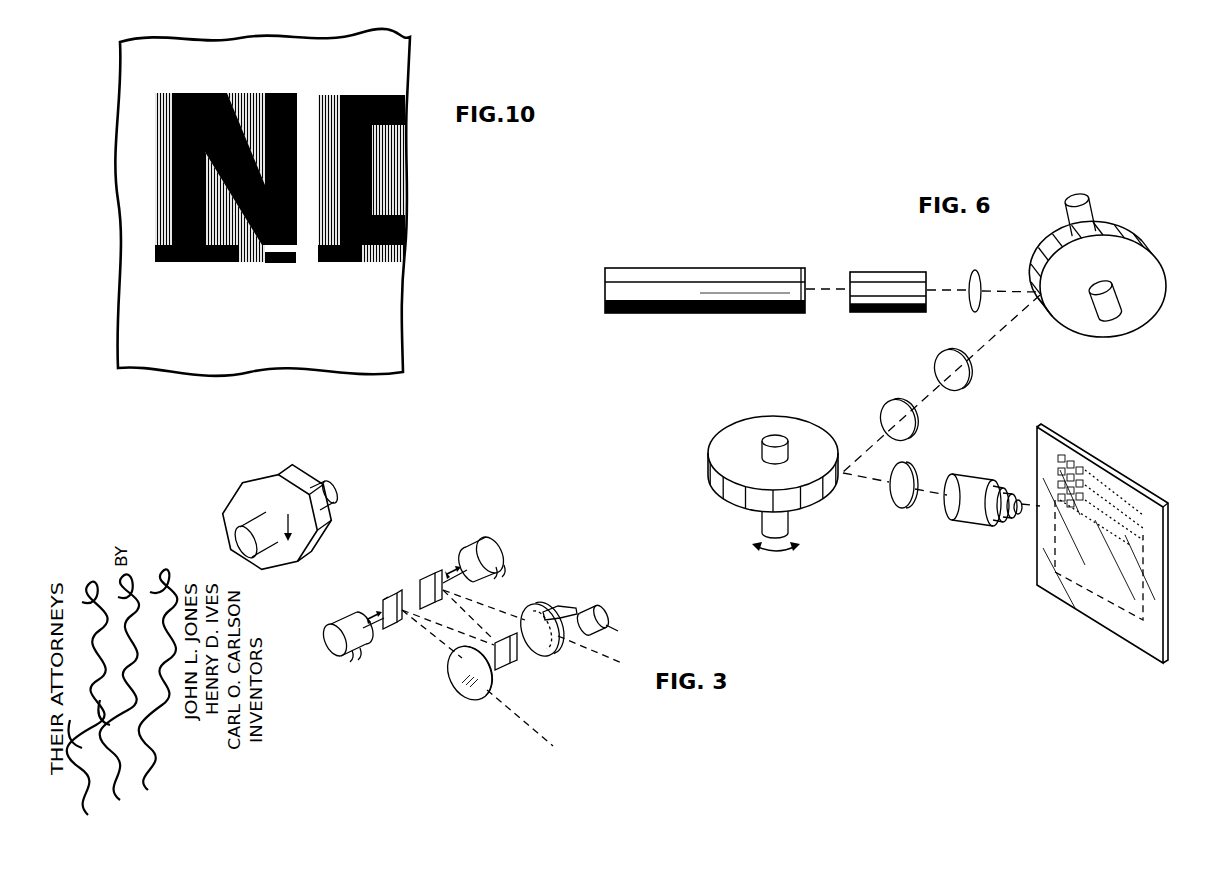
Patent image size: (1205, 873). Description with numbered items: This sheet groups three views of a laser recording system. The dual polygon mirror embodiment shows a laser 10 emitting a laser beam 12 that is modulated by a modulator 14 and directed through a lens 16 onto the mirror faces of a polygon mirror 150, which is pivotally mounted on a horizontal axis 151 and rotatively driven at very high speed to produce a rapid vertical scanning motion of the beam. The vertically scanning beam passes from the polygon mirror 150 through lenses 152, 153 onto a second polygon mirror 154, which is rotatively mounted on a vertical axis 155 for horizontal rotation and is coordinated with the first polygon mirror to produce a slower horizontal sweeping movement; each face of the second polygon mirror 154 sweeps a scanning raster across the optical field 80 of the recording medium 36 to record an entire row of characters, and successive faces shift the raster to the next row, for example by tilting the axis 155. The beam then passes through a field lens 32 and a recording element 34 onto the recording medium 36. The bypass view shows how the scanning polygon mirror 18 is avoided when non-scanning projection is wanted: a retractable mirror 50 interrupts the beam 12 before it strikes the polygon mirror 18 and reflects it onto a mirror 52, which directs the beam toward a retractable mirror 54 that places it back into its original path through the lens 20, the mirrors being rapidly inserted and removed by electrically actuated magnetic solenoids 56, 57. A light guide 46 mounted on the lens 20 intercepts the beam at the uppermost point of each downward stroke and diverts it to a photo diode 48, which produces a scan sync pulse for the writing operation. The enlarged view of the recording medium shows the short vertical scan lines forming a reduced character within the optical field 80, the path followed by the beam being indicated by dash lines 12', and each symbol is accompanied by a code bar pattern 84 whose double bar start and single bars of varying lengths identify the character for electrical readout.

In FIG. 6, the laser 10 is at (728, 275).
In FIG. 6, the laser beam 12 is at (827, 265).
In FIG. 10, the dash lines 12' is at (243, 172).
In FIG. 6, the modulator 14 is at (886, 276).
In FIG. 6, the lens 16 is at (980, 276).
In FIG. 3, the lens 16 is at (473, 691).
In FIG. 3, the polygon mirror 18 is at (306, 563).
In FIG. 3, the lens 20 is at (546, 650).
In FIG. 6, the field lens 32 is at (896, 504).
In FIG. 6, the recording element 34 is at (992, 512).
In FIG. 6, the recording medium 36 is at (1112, 490).
In FIG. 3, the light guide 46 is at (569, 608).
In FIG. 3, the photo diode 48 is at (600, 617).
In FIG. 3, the retractable mirror 50 is at (390, 592).
In FIG. 3, the mirror 52 is at (508, 667).
In FIG. 3, the retractable mirror 54 is at (432, 572).
In FIG. 3, the magnetic solenoid 56 is at (349, 622).
In FIG. 3, the magnetic solenoid 57 is at (500, 548).
In FIG. 10, the optical field 80 is at (398, 82).
In FIG. 6, the optical field 80 is at (1080, 463).
In FIG. 10, the code bar pattern 84 is at (258, 263).
In FIG. 6, the polygon mirror 150 is at (1130, 236).
In FIG. 6, the horizontal axis 151 is at (1090, 210).
In FIG. 6, the lens 152 is at (972, 378).
In FIG. 6, the lens 153 is at (918, 428).
In FIG. 6, the second polygon mirror 154 is at (752, 488).
In FIG. 6, the vertical axis 155 is at (780, 437).